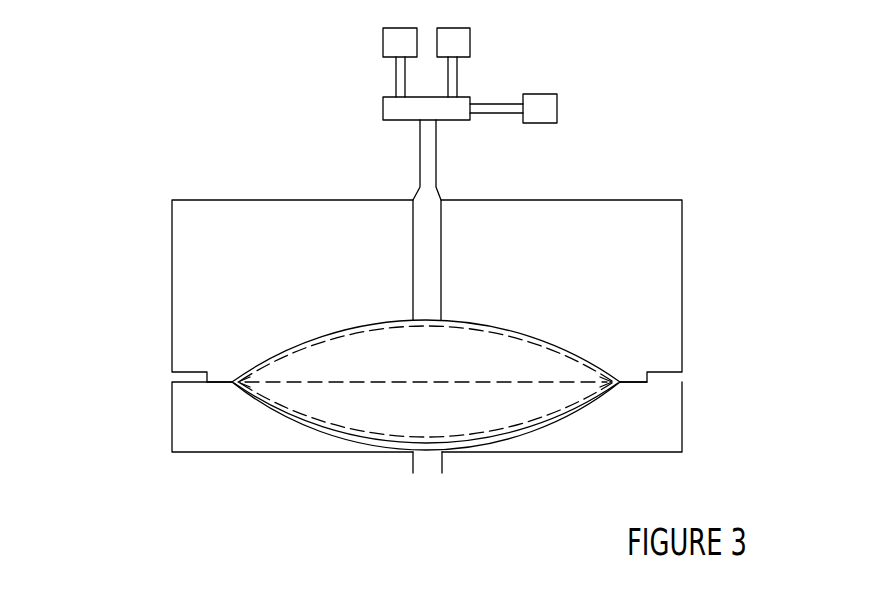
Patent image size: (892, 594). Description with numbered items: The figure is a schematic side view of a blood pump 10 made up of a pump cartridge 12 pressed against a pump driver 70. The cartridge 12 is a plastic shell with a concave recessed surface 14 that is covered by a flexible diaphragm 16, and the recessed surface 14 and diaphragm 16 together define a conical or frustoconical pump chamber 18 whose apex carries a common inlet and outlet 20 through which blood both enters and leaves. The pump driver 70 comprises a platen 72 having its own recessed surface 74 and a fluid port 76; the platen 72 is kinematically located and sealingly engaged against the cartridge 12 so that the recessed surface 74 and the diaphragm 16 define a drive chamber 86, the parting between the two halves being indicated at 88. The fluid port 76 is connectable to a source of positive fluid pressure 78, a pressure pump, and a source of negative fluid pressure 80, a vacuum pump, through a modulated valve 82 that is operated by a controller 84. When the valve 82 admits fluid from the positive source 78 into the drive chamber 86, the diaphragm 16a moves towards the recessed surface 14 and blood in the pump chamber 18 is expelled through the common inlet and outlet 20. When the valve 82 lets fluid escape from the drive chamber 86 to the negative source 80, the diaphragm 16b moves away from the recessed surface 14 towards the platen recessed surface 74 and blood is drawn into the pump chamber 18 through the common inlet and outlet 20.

The blood pump 10 is at (163, 426).
The pump cartridge 12 is at (187, 400).
The concave recessed surface 14 is at (337, 432).
The flexible diaphragm 16 is at (531, 383).
The flexible diaphragm 16a is at (316, 420).
The flexible diaphragm 16b is at (360, 330).
The pump chamber 18 is at (380, 413).
The common inlet and outlet 20 is at (422, 450).
The pump driver 70 is at (600, 190).
The platen 72 is at (662, 277).
The recessed surface 74 is at (555, 342).
The fluid port 76 is at (427, 223).
The source of positive fluid pressure 78 is at (398, 42).
The source of negative fluid pressure 80 is at (458, 42).
The modulated valve 82 is at (395, 108).
The controller 84 is at (537, 103).
The drive chamber 86 is at (340, 360).
The parting line 88 is at (585, 362).